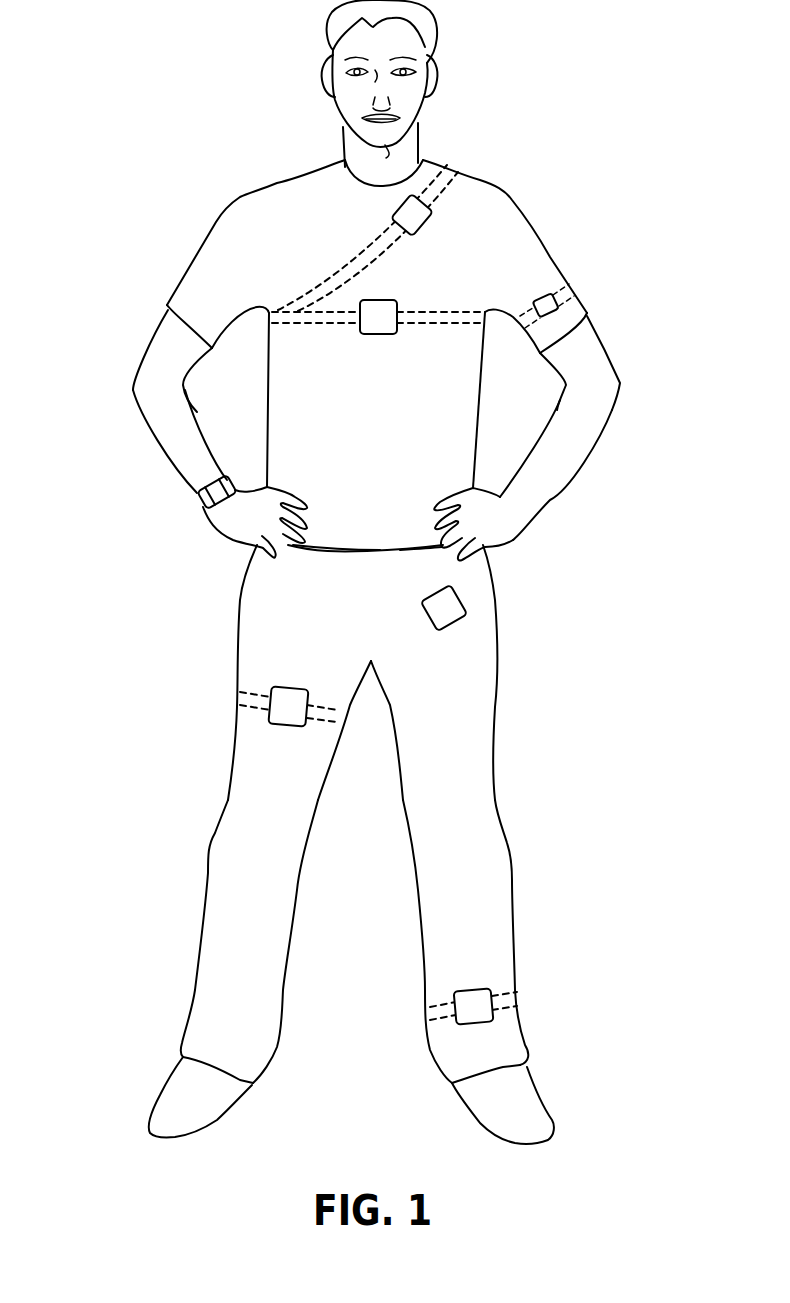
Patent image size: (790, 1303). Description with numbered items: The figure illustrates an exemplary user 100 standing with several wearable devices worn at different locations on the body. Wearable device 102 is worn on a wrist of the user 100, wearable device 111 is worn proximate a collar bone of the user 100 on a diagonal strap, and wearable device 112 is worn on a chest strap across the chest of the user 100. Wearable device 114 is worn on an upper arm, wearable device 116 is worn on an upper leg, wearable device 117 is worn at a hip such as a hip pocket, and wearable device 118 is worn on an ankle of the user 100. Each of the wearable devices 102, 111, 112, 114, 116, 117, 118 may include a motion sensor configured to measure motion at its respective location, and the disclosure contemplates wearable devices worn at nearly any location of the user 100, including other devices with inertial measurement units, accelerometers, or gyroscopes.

The user 100 is at (494, 186).
The wearable device 102 is at (200, 504).
The wearable device 111 is at (428, 222).
The wearable device 112 is at (392, 302).
The wearable device 114 is at (548, 312).
The wearable device 116 is at (287, 688).
The wearable device 117 is at (458, 595).
The wearable device 118 is at (468, 990).